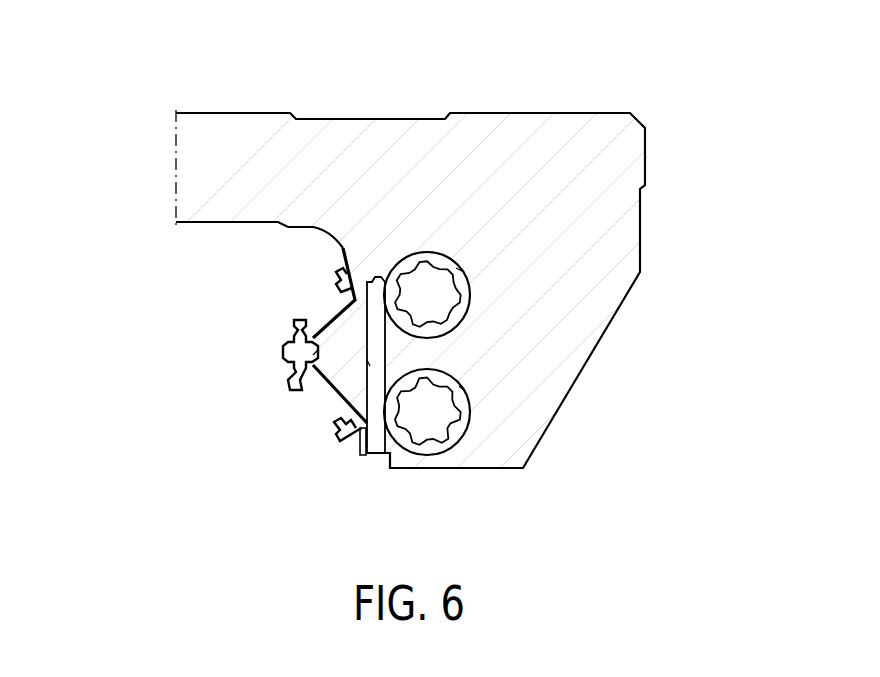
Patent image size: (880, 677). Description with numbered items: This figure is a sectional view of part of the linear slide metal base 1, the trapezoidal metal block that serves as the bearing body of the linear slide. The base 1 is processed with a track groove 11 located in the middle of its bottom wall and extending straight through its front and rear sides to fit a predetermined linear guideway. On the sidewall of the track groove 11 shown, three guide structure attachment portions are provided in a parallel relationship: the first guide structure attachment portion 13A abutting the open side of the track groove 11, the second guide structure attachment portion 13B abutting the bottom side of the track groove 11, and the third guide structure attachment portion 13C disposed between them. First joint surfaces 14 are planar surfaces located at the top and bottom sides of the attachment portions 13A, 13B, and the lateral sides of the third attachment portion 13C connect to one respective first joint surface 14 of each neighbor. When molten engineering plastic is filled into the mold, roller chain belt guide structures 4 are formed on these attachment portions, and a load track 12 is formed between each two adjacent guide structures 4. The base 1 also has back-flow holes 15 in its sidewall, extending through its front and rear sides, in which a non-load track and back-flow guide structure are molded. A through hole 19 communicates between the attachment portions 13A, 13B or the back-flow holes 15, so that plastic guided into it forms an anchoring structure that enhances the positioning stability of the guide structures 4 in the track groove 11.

The linear slide metal base 1 is at (213, 147).
The track groove 11 is at (230, 233).
The load track 12 is at (330, 318).
The roller chain belt guide structure 4 is at (298, 358).
The first joint surface 14 is at (357, 277).
The second guide structure attachment portion 13B is at (398, 258).
The first guide structure attachment portion 13A is at (390, 447).
The third guide structure attachment portion 13C is at (313, 355).
The back-flow hole 15 is at (467, 272).
The through hole 19 is at (373, 364).